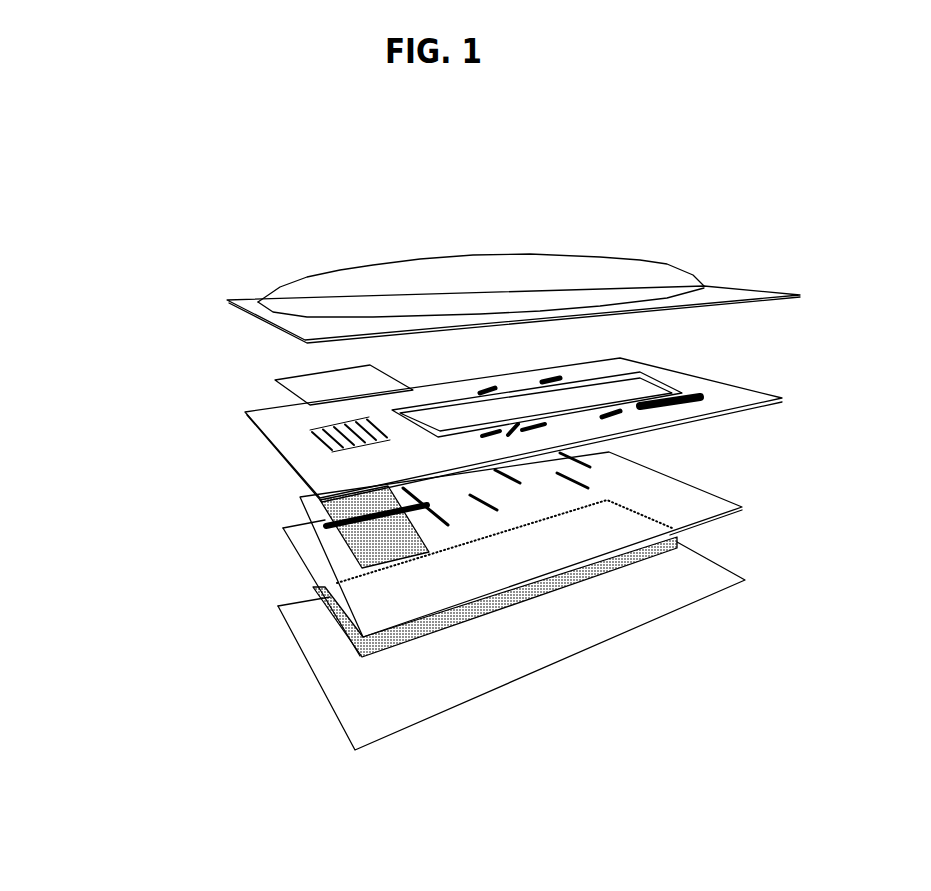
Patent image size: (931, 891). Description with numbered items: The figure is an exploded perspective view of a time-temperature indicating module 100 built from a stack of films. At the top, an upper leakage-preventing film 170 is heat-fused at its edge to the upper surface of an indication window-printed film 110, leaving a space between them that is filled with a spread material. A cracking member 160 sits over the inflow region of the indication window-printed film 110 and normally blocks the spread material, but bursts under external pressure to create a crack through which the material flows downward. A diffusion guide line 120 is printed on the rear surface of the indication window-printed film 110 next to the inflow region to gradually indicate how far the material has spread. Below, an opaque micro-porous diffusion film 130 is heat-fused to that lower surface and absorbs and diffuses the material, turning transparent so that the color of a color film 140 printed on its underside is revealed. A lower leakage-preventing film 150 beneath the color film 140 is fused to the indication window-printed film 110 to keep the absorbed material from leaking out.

The time-temperature indicating module 100 is at (117, 171).
The indication window-printed film 110 is at (290, 453).
The diffusion guide line 120 is at (320, 510).
The diffusion film 130 is at (323, 557).
The color film 140 is at (320, 617).
The lower leakage-preventing film 150 is at (332, 680).
The cracking member 160 is at (297, 383).
The upper leakage-preventing film 170 is at (246, 302).